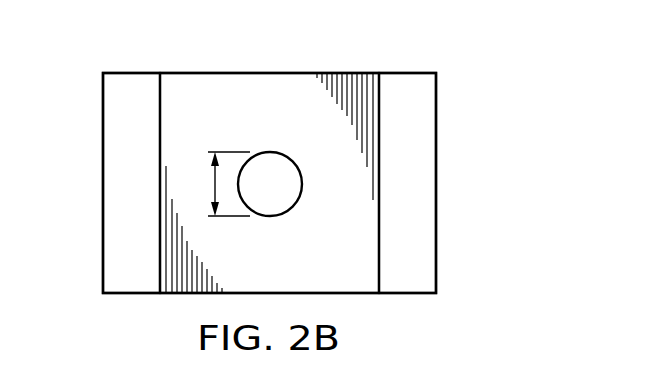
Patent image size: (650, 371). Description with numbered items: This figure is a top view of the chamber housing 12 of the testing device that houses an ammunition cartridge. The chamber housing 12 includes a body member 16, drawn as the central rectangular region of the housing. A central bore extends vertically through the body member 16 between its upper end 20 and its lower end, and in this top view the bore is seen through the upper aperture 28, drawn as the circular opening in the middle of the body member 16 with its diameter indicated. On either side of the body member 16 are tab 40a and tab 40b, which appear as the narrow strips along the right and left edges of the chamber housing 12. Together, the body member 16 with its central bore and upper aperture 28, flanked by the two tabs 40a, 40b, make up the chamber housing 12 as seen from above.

The chamber housing 12 is at (490, 150).
The body member 16 is at (228, 66).
The upper end 20 is at (290, 83).
The upper aperture 28 is at (212, 176).
The tab 40a is at (428, 215).
The tab 40b is at (112, 182).